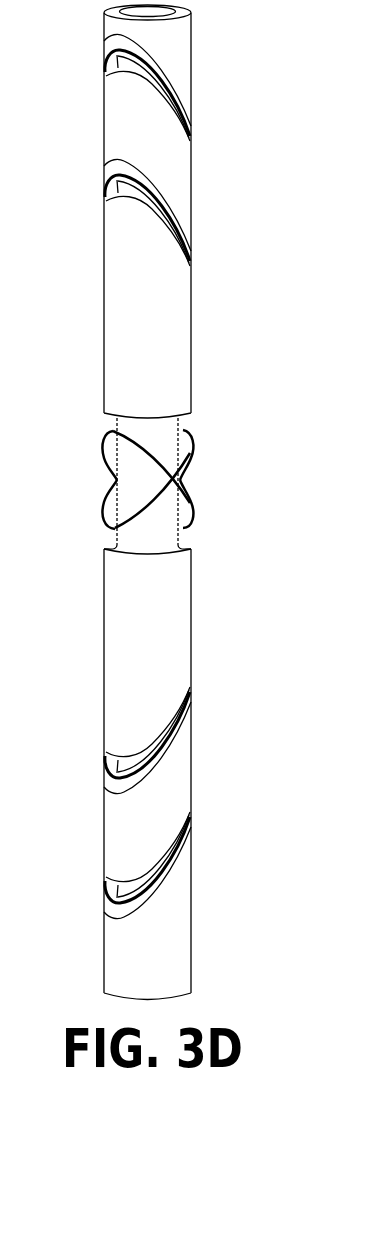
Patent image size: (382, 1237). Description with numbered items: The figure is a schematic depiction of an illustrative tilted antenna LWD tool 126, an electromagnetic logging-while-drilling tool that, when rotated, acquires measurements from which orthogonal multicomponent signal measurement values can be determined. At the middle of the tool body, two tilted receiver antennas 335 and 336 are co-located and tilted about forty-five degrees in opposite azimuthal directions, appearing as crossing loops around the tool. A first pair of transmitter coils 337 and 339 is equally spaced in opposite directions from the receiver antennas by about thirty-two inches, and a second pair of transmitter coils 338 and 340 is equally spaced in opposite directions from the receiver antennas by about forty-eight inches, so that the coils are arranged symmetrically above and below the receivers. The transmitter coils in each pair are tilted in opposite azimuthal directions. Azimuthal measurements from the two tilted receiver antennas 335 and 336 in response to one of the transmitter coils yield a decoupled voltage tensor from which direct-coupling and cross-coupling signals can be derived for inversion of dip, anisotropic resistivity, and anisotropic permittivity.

The tilted antenna LWD tool 126 is at (105, 20).
The tilted receiver antenna 335 is at (105, 460).
The tilted receiver antenna 336 is at (105, 508).
The transmitter coil 337 is at (105, 772).
The transmitter coil 338 is at (105, 895).
The transmitter coil 339 is at (105, 190).
The transmitter coil 340 is at (105, 65).